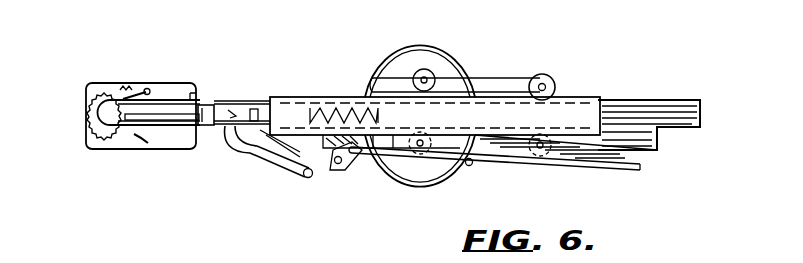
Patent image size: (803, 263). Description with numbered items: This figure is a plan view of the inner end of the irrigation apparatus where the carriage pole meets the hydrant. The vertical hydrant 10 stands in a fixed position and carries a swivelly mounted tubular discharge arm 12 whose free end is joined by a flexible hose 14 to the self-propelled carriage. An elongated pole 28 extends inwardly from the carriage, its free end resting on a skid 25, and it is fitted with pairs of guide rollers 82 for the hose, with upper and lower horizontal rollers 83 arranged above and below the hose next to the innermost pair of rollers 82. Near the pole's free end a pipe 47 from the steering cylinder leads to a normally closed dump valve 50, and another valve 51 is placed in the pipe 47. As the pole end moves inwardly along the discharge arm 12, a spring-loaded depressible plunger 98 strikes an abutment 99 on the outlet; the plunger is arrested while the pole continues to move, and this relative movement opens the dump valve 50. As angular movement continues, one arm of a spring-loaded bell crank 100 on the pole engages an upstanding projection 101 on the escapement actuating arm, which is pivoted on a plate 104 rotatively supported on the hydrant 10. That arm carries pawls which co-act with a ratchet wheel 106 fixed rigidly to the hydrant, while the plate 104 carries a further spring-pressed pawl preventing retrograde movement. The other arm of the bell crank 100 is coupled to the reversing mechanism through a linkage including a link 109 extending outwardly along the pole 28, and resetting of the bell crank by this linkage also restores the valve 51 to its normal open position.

The vertical hydrant 10 is at (162, 169).
The tubular discharge arm 12 is at (175, 125).
The flexible hose 14 is at (632, 101).
The skid 25 is at (452, 74).
The pole 28 is at (617, 133).
The pipe 47 is at (237, 111).
The dump valve 50 is at (257, 107).
The valve 51 is at (357, 165).
The guide rollers 82 is at (426, 70).
The horizontal rollers 83 is at (369, 83).
The spring-loaded depressible plunger 98 is at (210, 109).
The abutment 99 is at (153, 115).
The spring-loaded bell crank 100 is at (300, 160).
The upstanding projection 101 is at (309, 177).
The plate 104 is at (115, 145).
The ratchet wheel 106 is at (114, 97).
The link 109 is at (589, 168).